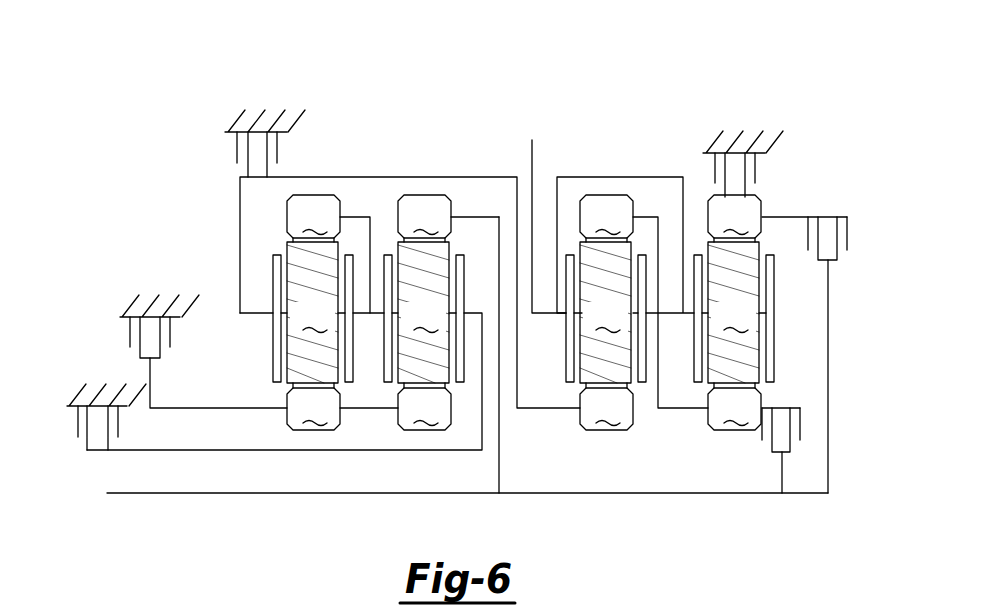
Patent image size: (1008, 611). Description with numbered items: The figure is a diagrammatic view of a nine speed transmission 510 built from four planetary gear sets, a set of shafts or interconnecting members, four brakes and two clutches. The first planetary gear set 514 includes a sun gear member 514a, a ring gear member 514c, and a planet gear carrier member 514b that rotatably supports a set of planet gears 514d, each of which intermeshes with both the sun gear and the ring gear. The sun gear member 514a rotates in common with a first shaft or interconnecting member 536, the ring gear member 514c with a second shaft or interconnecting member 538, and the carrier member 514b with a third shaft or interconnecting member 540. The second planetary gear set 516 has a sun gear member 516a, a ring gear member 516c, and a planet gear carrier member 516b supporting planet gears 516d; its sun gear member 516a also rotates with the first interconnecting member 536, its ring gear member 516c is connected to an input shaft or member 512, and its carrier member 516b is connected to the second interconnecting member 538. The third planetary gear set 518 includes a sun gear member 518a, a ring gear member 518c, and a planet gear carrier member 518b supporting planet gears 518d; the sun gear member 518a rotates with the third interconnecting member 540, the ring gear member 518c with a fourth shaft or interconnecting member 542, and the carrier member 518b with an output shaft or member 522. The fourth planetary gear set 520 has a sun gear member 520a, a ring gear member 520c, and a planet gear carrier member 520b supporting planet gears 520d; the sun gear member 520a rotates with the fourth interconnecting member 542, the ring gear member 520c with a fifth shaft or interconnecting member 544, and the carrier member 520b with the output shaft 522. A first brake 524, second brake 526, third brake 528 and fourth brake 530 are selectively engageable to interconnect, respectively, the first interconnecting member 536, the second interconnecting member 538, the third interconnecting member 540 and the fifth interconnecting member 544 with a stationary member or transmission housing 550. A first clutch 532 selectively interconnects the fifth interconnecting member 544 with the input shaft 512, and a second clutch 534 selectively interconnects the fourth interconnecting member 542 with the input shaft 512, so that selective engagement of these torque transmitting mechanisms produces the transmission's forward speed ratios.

The transmission 510 is at (783, 86).
The input shaft or member 512 is at (190, 494).
The first planetary gear set 514 is at (277, 258).
The sun gear member 514a is at (313, 406).
The planet gear carrier member 514b is at (273, 350).
The ring gear member 514c is at (313, 218).
The planet gears 514d is at (312, 312).
The second planetary gear set 516 is at (443, 258).
The sun gear member 516a is at (424, 406).
The planet gear carrier member 516b is at (466, 259).
The ring gear member 516c is at (448, 218).
The planet gears 516d is at (423, 312).
The third planetary gear set 518 is at (618, 272).
The sun gear member 518a is at (606, 406).
The planet gear carrier member 518b is at (649, 370).
The ring gear member 518c is at (606, 218).
The planet gears 518d is at (605, 312).
The fourth planetary gear set 520 is at (768, 277).
The sun gear member 520a is at (734, 406).
The planet gear carrier member 520b is at (776, 326).
The ring gear member 520c is at (734, 218).
The planet gears 520d is at (733, 312).
The output shaft or member 522 is at (532, 140).
The first brake 524 is at (130, 333).
The second brake 526 is at (78, 423).
The third brake 528 is at (237, 148).
The fourth brake 530 is at (705, 153).
The first clutch 532 is at (848, 232).
The second clutch 534 is at (800, 422).
The first shaft or interconnecting member 536 is at (218, 409).
The second shaft or interconnecting member 538 is at (366, 216).
The third shaft or interconnecting member 540 is at (481, 176).
The fourth shaft or interconnecting member 542 is at (692, 409).
The fifth shaft or interconnecting member 544 is at (796, 216).
The stationary member or transmission housing 550 is at (240, 112).